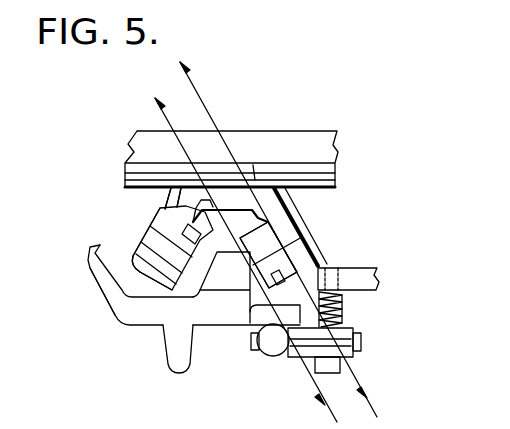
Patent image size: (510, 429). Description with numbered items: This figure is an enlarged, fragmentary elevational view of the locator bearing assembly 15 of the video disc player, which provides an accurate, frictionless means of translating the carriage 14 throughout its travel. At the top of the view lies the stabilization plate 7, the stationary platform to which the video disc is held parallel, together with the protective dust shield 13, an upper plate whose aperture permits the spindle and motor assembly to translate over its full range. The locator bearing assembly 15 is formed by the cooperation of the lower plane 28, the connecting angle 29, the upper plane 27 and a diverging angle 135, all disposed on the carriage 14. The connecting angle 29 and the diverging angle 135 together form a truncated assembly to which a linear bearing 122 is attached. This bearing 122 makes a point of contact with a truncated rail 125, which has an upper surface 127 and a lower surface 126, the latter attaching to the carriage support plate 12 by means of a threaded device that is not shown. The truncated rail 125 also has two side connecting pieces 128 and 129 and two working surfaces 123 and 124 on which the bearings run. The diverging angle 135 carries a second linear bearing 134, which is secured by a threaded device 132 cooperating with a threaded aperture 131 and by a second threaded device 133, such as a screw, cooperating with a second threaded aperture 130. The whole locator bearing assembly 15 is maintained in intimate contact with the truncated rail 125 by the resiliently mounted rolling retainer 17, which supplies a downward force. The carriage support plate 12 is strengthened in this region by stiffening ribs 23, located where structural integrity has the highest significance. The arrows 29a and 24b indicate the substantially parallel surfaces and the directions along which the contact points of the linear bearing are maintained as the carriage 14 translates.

The stabilization plate 7 is at (338, 147).
The protective dust shield 13 is at (333, 180).
The upper plane of the carriage 27 is at (254, 172).
The connecting angle 29 is at (298, 196).
The carriage 14 is at (301, 220).
The linear bearing 122 is at (302, 237).
The lower plane of the carriage 28 is at (365, 291).
The rolling retainer 17 is at (372, 342).
The direction of movement 24b is at (318, 388).
The arrow indicating parallel surface 29a is at (357, 380).
The locator bearing assembly 15 is at (238, 384).
The carriage support plate 12 is at (110, 302).
The second linear bearing 134 is at (110, 270).
The stiffening ribs 23 is at (178, 375).
The second threaded aperture 130 is at (180, 207).
The working surface 124 is at (163, 229).
The threaded aperture 131 is at (142, 258).
The threaded device 132 is at (172, 283).
The diverging angle 135 is at (158, 226).
The second threaded device 133 is at (204, 211).
The upper surface of the truncated rail 127 is at (266, 221).
The working surface 123 is at (268, 255).
The side connecting piece 128 is at (263, 287).
The truncated rail 125 is at (227, 274).
The lower surface of the truncated rail 126 is at (252, 319).
The side connecting piece 129 is at (199, 292).